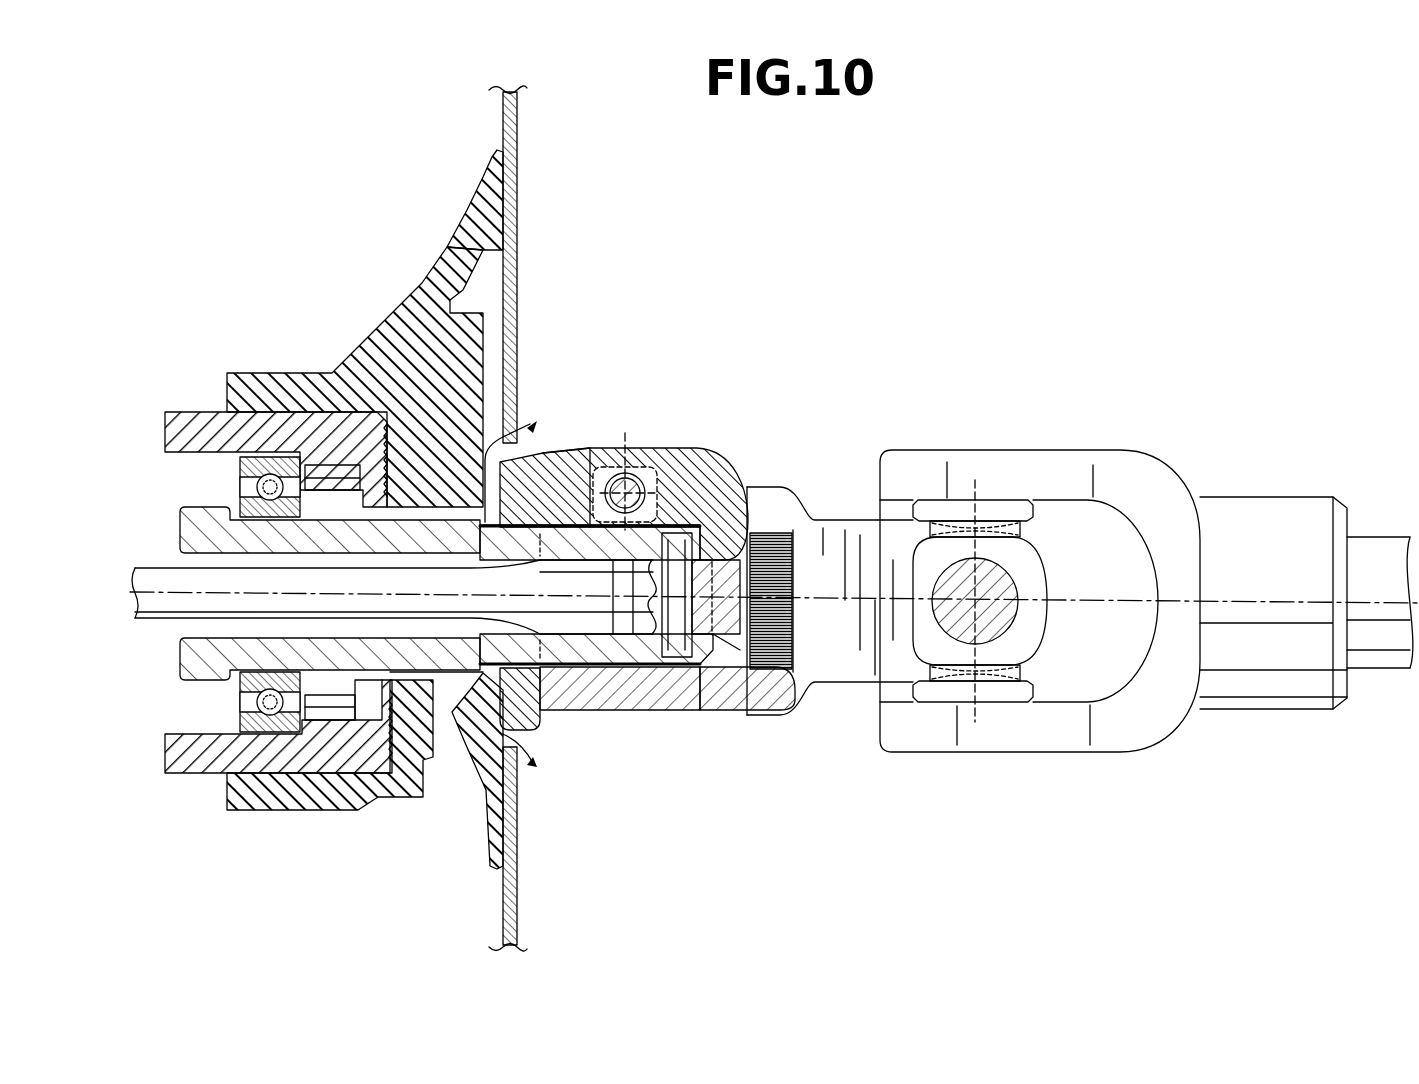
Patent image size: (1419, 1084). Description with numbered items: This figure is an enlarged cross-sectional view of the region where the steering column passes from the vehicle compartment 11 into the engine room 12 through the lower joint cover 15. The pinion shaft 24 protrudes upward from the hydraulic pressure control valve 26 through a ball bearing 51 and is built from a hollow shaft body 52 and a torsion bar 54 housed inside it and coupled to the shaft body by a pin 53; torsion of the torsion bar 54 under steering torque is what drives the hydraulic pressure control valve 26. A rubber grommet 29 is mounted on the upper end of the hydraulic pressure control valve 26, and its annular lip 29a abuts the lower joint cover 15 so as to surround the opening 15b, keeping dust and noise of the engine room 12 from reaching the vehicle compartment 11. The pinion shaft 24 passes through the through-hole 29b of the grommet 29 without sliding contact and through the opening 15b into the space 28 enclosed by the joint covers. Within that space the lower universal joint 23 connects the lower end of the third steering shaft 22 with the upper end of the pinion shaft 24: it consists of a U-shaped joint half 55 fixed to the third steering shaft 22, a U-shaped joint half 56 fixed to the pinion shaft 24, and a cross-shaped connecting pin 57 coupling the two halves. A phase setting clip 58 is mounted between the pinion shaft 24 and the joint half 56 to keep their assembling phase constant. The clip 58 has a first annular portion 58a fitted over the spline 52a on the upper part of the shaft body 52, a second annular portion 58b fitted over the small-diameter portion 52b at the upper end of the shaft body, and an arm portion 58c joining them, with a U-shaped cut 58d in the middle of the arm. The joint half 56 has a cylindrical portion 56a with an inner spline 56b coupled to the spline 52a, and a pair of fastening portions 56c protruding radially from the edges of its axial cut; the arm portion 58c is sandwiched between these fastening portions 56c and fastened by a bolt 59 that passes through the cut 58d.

The vehicle compartment 11 is at (693, 345).
The engine room 12 is at (183, 228).
The lower joint cover 15 is at (500, 125).
The opening 15b is at (522, 350).
The third steering shaft 22 is at (1373, 545).
The lower universal joint 23 is at (1031, 372).
The pinion shaft 24 is at (193, 495).
The hydraulic pressure control valve 26 is at (191, 404).
The space 28 is at (900, 253).
The rubber grommet 29 is at (374, 317).
The annular lip 29a is at (494, 208).
The through-hole 29b is at (440, 680).
The ball bearing 51 is at (262, 487).
The hollow shaft body 52 is at (327, 505).
The spline 52a is at (637, 708).
The small-diameter portion 52b is at (715, 632).
The pin 53 is at (675, 658).
The torsion bar 54 is at (163, 572).
The U-shaped joint half 55 is at (1155, 448).
The U-shaped joint half 56 is at (842, 512).
The cylindrical portion 56a is at (750, 704).
The spline 56b is at (776, 612).
The fastening portions 56c is at (545, 451).
The cross-shaped connecting pin 57 is at (1020, 534).
The phase setting clip 58 is at (723, 462).
The first annular portion 58a is at (538, 740).
The second annular portion 58b is at (725, 680).
The arm portion 58c is at (628, 455).
The U-shaped cut 58d is at (656, 508).
The bolt 59 is at (619, 512).